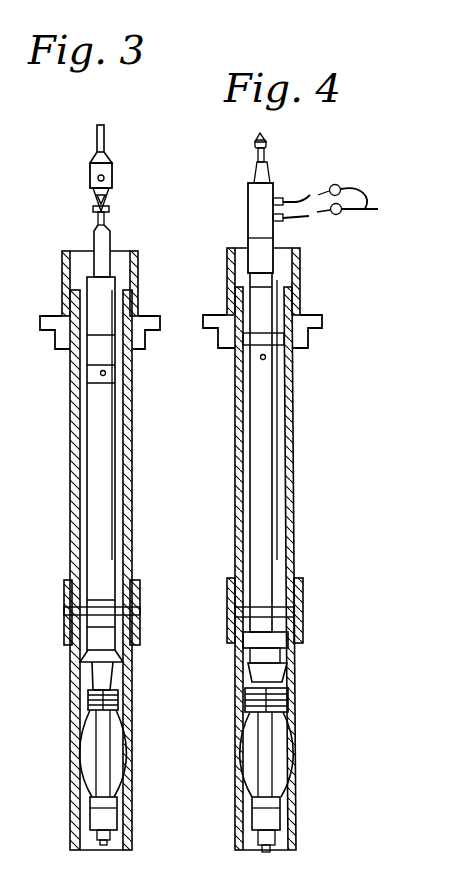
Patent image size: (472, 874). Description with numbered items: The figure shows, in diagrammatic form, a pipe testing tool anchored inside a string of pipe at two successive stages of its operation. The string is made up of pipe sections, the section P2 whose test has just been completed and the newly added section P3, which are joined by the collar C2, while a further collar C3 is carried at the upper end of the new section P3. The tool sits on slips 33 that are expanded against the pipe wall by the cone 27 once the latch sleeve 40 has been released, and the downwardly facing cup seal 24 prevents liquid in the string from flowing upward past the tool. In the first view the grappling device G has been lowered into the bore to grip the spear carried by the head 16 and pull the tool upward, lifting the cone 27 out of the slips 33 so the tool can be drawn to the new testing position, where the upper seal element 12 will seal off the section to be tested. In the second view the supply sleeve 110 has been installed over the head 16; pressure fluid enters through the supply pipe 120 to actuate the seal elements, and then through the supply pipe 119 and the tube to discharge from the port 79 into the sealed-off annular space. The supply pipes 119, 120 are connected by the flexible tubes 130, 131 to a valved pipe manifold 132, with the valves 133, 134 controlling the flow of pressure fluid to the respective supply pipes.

In FIG. 3, the grappling device G is at (90, 167).
In FIG. 3, the head 16 is at (94, 238).
In FIG. 3, the port 79 is at (100, 373).
In FIG. 4, the port 79 is at (266, 357).
In FIG. 3, the collar C3 is at (62, 270).
In FIG. 3, the pipe section P3 is at (70, 473).
In FIG. 4, the pipe section P3 is at (296, 461).
In FIG. 3, the collar C2 is at (66, 600).
In FIG. 4, the collar C2 is at (303, 591).
In FIG. 3, the cup seal 24 is at (88, 658).
In FIG. 4, the cup seal 24 is at (295, 676).
In FIG. 3, the cone 27 is at (97, 682).
In FIG. 3, the slips 33 is at (88, 700).
In FIG. 4, the slips 33 is at (290, 701).
In FIG. 3, the pipe section P2 is at (70, 803).
In FIG. 4, the pipe section P2 is at (297, 760).
In FIG. 4, the supply sleeve 110 is at (250, 207).
In FIG. 4, the supply pipe 119 is at (281, 197).
In FIG. 4, the supply pipe 120 is at (278, 222).
In FIG. 4, the flexible tube 130 is at (298, 198).
In FIG. 4, the flexible tube 131 is at (312, 219).
In FIG. 4, the pipe manifold 132 is at (357, 194).
In FIG. 4, the valve 133 is at (339, 183).
In FIG. 4, the valve 134 is at (340, 216).
In FIG. 4, the upper seal element 12 is at (286, 339).
In FIG. 4, the latch sleeve 40 is at (296, 838).